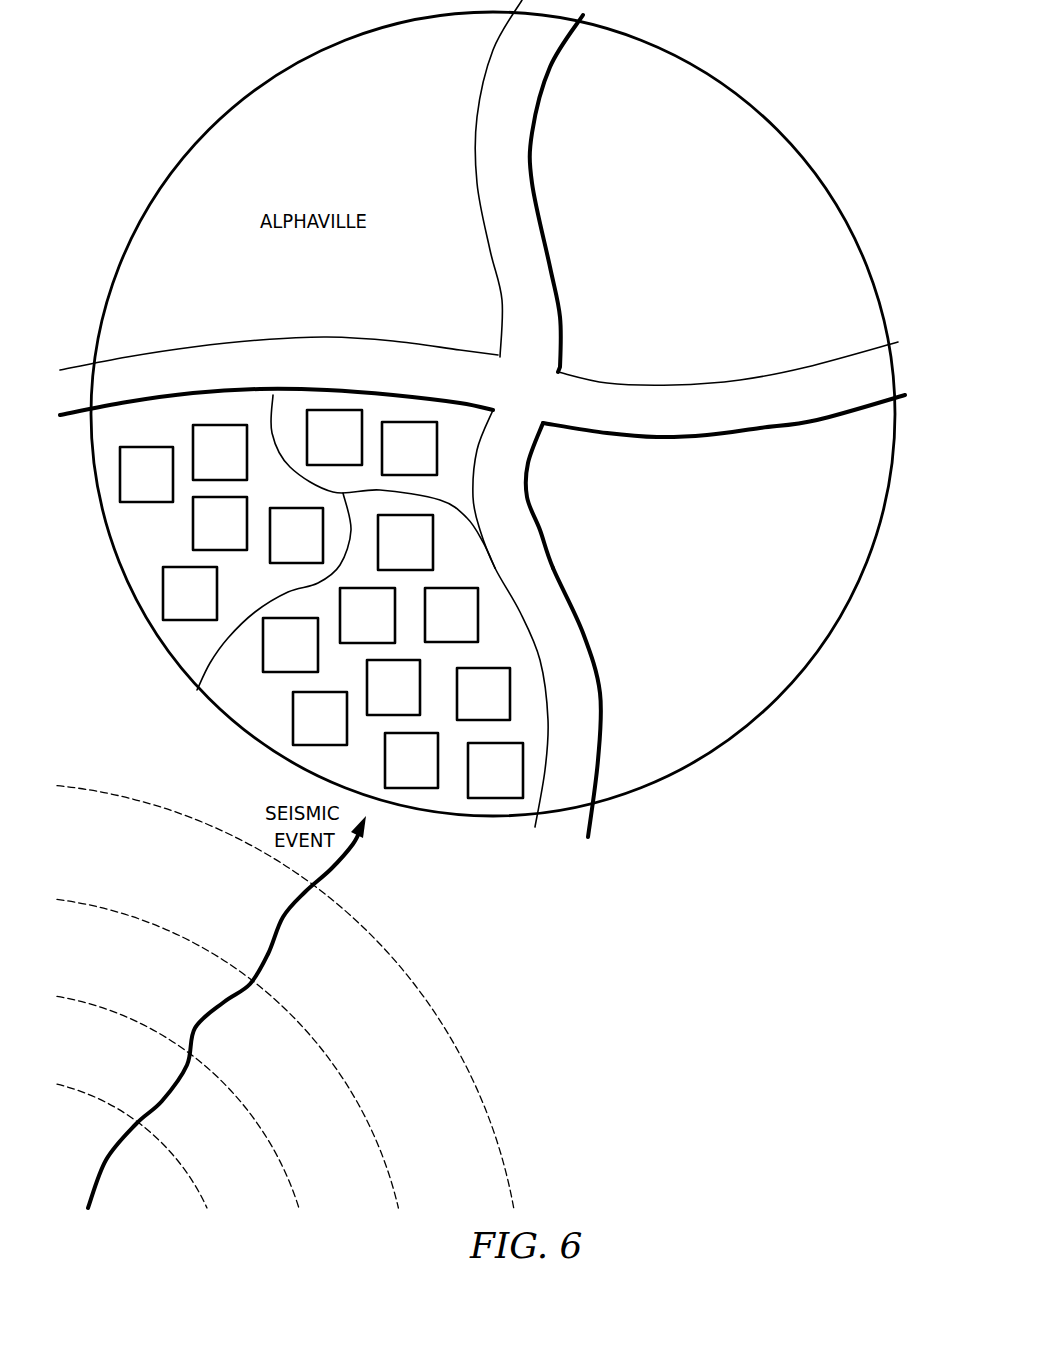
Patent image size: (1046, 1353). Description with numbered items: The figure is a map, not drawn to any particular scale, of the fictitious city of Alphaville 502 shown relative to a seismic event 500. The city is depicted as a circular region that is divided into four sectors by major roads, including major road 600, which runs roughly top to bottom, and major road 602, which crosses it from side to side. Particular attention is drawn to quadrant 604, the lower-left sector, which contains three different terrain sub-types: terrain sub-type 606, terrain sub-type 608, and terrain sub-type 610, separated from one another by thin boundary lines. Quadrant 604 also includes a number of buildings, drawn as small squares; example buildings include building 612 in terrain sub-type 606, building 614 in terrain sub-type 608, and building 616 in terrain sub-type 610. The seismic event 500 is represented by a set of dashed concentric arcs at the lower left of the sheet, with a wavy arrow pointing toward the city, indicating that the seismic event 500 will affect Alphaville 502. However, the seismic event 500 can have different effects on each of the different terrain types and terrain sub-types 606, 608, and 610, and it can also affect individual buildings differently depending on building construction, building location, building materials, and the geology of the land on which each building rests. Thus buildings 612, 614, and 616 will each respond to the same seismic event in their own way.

The seismic event 500 is at (511, 1171).
The Alphaville 502 is at (708, 66).
The major road 600 is at (534, 195).
The major road 602 is at (695, 438).
The quadrant 604 is at (220, 685).
The terrain sub-type 606 is at (130, 550).
The terrain sub-type 608 is at (458, 483).
The terrain sub-type 610 is at (505, 638).
The building 612 is at (238, 466).
The building 614 is at (428, 462).
The building 616 is at (472, 627).